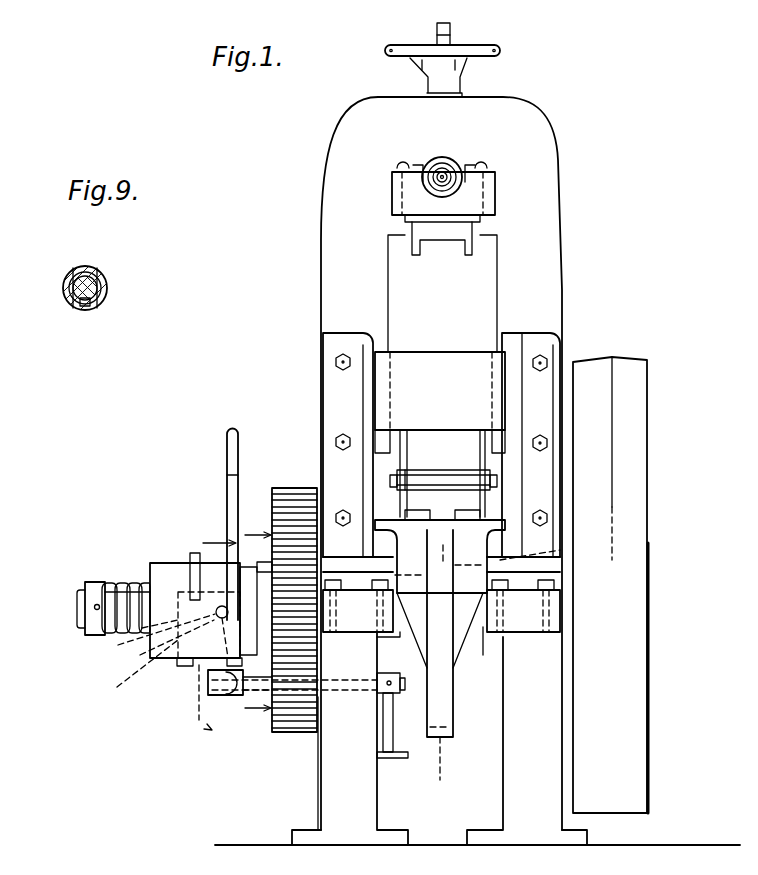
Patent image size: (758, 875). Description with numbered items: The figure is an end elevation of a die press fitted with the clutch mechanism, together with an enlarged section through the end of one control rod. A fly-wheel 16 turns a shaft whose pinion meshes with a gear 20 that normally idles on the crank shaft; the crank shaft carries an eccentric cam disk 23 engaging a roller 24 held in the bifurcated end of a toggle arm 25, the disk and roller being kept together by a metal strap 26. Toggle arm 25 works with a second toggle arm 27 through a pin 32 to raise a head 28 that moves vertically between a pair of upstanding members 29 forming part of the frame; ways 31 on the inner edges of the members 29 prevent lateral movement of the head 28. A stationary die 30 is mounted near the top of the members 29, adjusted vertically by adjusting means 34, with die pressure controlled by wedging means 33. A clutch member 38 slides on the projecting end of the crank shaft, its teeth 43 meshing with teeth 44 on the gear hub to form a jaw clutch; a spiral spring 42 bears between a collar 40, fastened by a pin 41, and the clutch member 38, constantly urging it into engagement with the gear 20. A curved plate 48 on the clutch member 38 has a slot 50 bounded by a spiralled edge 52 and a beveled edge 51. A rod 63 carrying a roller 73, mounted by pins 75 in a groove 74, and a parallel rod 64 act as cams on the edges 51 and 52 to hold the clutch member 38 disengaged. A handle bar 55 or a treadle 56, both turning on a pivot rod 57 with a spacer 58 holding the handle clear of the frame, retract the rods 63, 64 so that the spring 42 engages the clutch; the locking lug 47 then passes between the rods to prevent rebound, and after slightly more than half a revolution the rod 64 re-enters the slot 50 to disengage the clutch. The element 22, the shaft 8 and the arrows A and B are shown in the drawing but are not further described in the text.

In FIG. 1, the fly-wheel 16 is at (643, 430).
In FIG. 1, the gear 20 is at (284, 490).
In FIG. 1, the bearing block 22 is at (365, 603).
In FIG. 1, the eccentric cam disk 23 is at (452, 770).
In FIG. 1, the roller 24 is at (562, 550).
In FIG. 1, the toggle arm 25 is at (490, 548).
In FIG. 1, the metal strap 26 is at (447, 703).
In FIG. 1, the toggle arm 27 is at (443, 475).
In FIG. 1, the head 28 is at (440, 368).
In FIG. 1, the upstanding members 29 is at (320, 288).
In FIG. 1, the stationary die 30 is at (470, 245).
In FIG. 1, the ways 31 is at (385, 338).
In FIG. 1, the pin 32 is at (455, 487).
In FIG. 1, the wedging means 33 is at (473, 192).
In FIG. 1, the adjusting means 34 is at (500, 50).
In FIG. 1, the clutch member 38 is at (153, 562).
In FIG. 1, the collar 40 is at (92, 580).
In FIG. 1, the pin 41 is at (95, 608).
In FIG. 1, the spiral spring 42 is at (140, 583).
In FIG. 1, the teeth 43 is at (243, 645).
In FIG. 1, the teeth 44 is at (267, 573).
In FIG. 1, the locking lug 47 is at (195, 555).
In FIG. 1, the curved plate 48 is at (200, 665).
In FIG. 1, the slot 50 is at (162, 646).
In FIG. 1, the beveled edge 51 is at (221, 694).
In FIG. 1, the spiralled edge 52 is at (131, 676).
In FIG. 1, the handle bar 55 is at (233, 443).
In FIG. 1, the treadle 56 is at (398, 757).
In FIG. 1, the pivot rod 57 is at (400, 693).
In FIG. 1, the spacer 58 is at (243, 700).
In FIG. 1, the rod 63 is at (294, 695).
In FIG. 9, the rod 63 is at (108, 290).
In FIG. 1, the rod 64 is at (148, 640).
In FIG. 9, the roller 73 is at (95, 272).
In FIG. 9, the groove 74 is at (88, 308).
In FIG. 9, the pins 75 is at (72, 284).
In FIG. 1, the shaft direction 8 is at (257, 704).
In FIG. 1, the direction arrow A is at (209, 641).
In FIG. 1, the direction arrow B is at (258, 609).